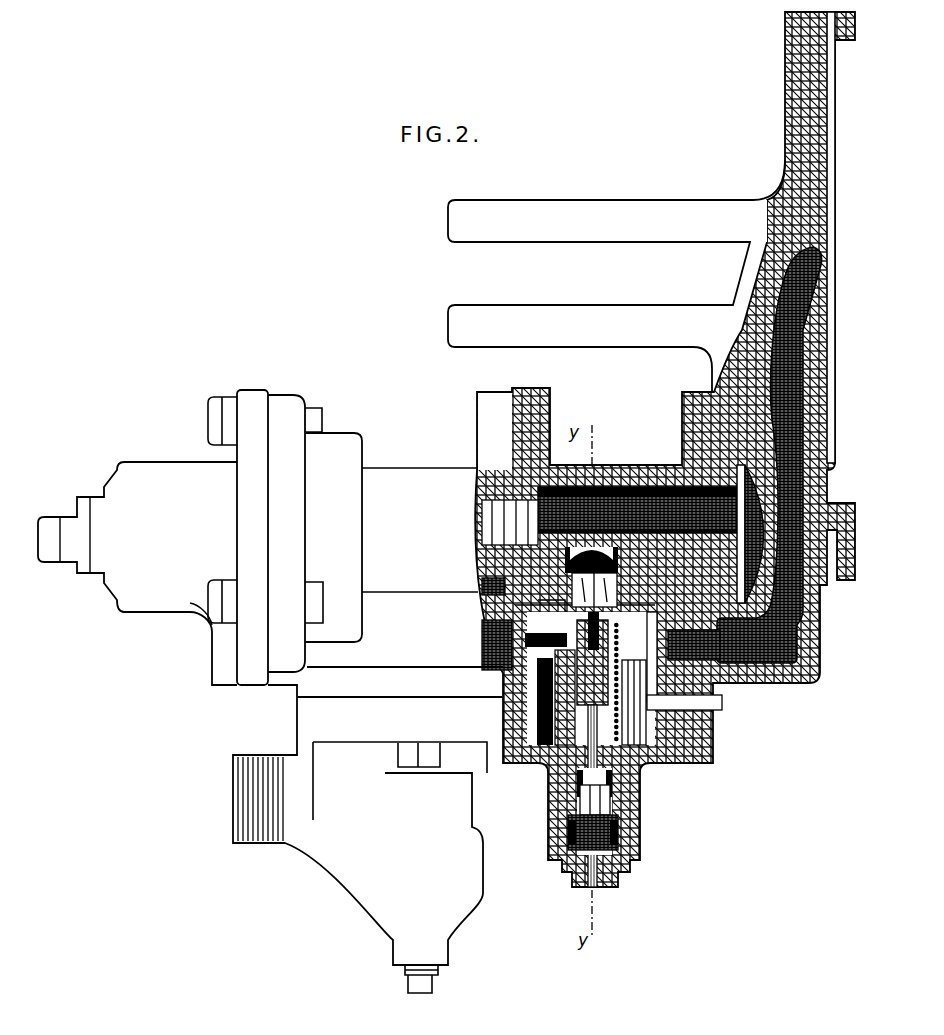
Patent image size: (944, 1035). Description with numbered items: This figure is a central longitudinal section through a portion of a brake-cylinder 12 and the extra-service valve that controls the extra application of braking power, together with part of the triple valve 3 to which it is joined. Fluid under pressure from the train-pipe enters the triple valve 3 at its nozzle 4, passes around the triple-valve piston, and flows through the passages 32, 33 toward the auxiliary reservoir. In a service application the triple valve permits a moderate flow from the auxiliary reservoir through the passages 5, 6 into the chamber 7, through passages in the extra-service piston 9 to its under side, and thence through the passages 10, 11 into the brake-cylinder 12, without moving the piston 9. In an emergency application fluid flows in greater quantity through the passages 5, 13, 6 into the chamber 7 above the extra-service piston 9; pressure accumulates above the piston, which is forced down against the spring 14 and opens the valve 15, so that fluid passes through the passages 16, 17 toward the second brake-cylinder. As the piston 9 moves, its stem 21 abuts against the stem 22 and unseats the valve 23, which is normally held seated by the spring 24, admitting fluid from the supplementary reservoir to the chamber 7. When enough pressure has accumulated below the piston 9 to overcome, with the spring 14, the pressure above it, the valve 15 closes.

The triple valve 3 is at (391, 537).
The nozzle 4 is at (260, 788).
The passage 5 is at (493, 589).
The passage 6 is at (545, 689).
The chamber 7 is at (510, 522).
The extra-service piston 9 is at (684, 661).
The passage 10 is at (694, 646).
The passage 11 is at (769, 455).
The brake-cylinder 12 is at (843, 237).
The passage 13 is at (497, 645).
The spring 14 is at (630, 684).
The valve 15 is at (608, 590).
The passage 16 is at (551, 597).
The passage 17 is at (606, 557).
The stem 21 is at (592, 658).
The stem 22 is at (607, 796).
The valve 23 is at (604, 792).
The spring 24 is at (601, 832).
The passage 32 is at (637, 510).
The passage 33 is at (750, 534).